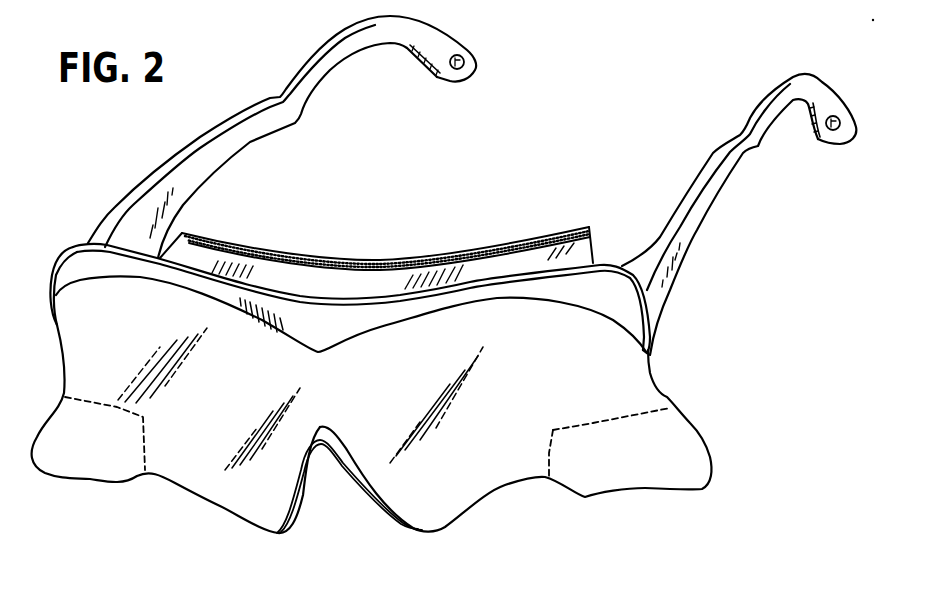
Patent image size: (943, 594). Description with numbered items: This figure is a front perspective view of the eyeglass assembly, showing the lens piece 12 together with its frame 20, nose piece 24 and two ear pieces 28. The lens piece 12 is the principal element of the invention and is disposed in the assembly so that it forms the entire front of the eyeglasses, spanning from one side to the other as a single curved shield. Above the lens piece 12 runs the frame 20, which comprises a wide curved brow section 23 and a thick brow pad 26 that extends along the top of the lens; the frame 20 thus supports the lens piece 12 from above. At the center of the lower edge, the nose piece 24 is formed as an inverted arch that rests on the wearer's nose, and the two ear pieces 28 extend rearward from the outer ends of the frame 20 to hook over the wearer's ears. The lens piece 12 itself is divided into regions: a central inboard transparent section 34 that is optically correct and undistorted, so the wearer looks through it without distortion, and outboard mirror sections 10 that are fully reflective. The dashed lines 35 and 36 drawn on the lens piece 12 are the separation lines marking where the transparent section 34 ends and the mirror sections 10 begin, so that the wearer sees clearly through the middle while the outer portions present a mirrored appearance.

The mirror sections 10 is at (85, 453).
The lens piece 12 is at (447, 467).
The frame 20 is at (332, 318).
The brow section 23 is at (387, 282).
The nose piece 24 is at (363, 495).
The brow pad 26 is at (480, 252).
The ear pieces 28 is at (226, 124).
The transparent section 34 is at (217, 460).
The dashed line 35 is at (147, 433).
The dashed line 36 is at (85, 397).